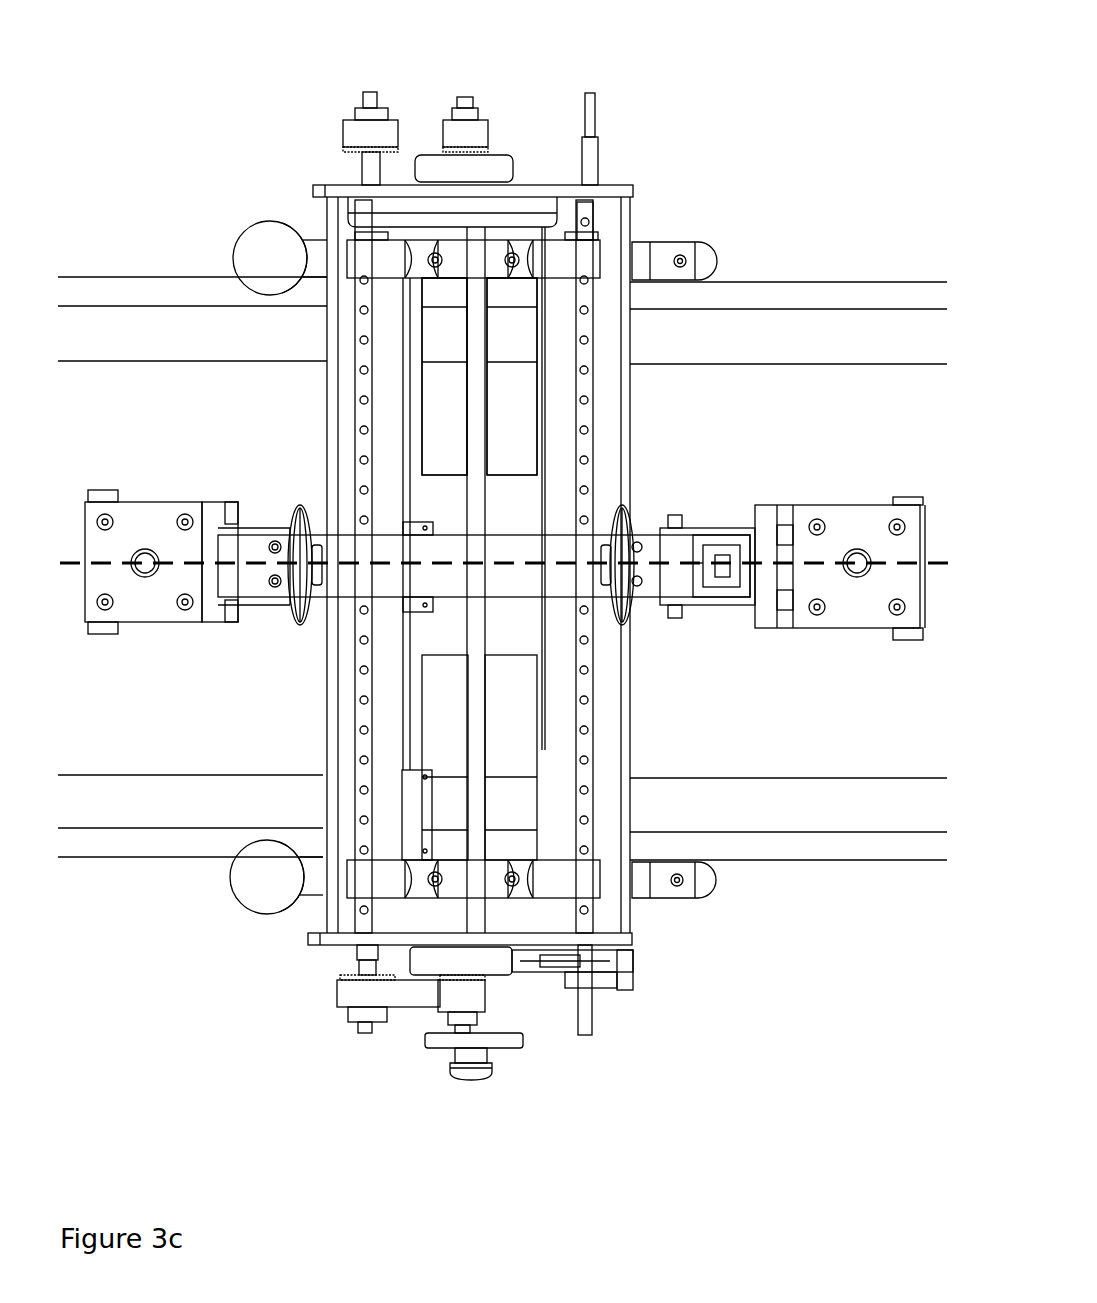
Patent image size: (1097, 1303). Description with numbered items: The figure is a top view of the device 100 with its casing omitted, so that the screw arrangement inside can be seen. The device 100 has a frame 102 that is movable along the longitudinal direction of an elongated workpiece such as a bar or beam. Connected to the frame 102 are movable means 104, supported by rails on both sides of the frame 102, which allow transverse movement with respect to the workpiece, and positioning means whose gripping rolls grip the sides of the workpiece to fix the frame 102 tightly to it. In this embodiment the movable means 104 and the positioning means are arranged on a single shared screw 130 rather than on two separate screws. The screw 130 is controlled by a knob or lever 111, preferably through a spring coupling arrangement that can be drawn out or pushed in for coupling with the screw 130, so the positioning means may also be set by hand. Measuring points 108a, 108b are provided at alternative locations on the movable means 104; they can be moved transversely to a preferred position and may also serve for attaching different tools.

The device 100 is at (230, 26).
The frame 102 is at (333, 230).
The first movable means 104 is at (540, 547).
The measuring point 108a is at (147, 556).
The measuring point 108b is at (858, 548).
The knob or lever 111 is at (490, 1082).
The screw 130 is at (480, 460).